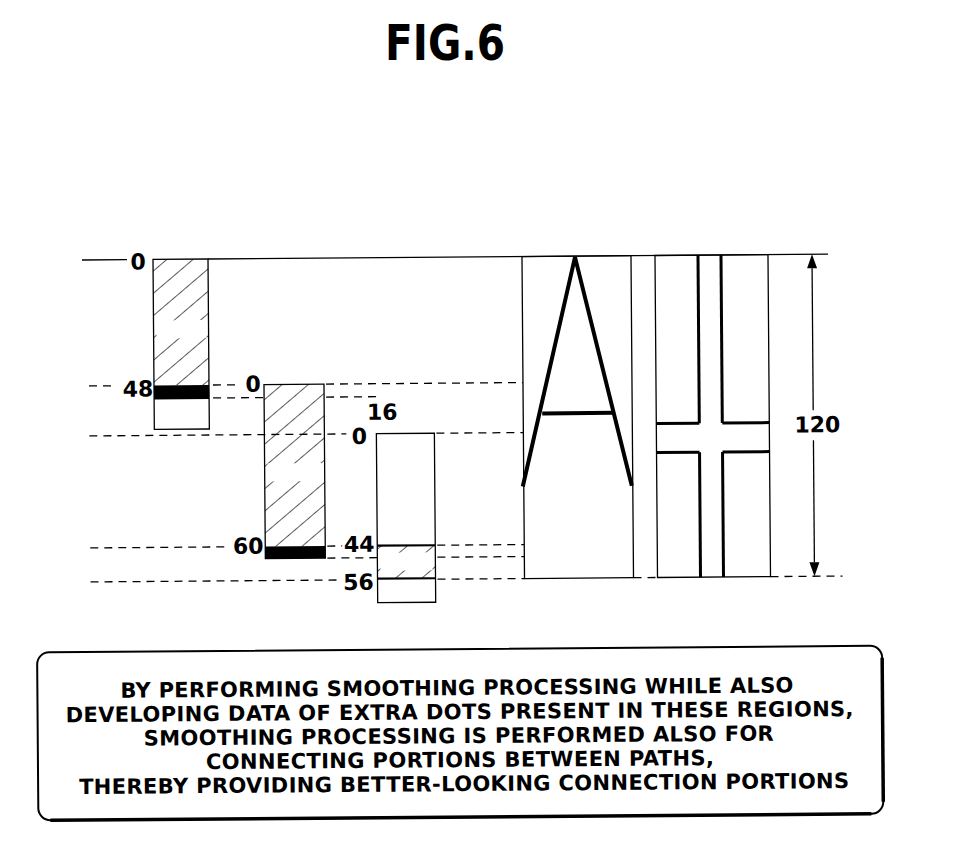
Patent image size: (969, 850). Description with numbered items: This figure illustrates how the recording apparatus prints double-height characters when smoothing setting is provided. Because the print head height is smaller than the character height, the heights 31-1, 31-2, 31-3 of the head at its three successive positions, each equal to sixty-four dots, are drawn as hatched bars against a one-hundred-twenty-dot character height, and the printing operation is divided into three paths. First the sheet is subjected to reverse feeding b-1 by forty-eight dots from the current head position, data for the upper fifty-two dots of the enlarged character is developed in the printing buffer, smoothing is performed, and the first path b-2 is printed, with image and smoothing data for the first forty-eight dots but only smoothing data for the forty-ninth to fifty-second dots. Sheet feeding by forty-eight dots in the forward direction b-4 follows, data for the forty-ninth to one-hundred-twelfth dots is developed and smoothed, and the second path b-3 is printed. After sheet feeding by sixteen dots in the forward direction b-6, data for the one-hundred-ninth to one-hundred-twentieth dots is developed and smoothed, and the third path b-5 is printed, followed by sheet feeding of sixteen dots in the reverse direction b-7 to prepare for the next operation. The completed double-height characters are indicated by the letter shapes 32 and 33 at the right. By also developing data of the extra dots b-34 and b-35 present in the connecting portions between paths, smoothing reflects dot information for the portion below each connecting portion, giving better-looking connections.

The head height at first position 31-1 is at (196, 268).
The head height at second position 31-2 is at (279, 451).
The head height at third position 31-3 is at (418, 503).
The recorded double-height character 32 is at (613, 274).
The recorded double-height character 33 is at (750, 275).
The reverse feeding b-1 is at (118, 274).
The first path b-2 is at (172, 233).
The second path b-3 is at (242, 485).
The forward sheet feeding b-4 is at (291, 260).
The third path b-5 is at (355, 503).
The forward sheet feeding b-6 is at (405, 422).
The reverse sheet feeding b-7 is at (472, 400).
The extra dots b-34 is at (183, 415).
The extra dots b-35 is at (250, 567).